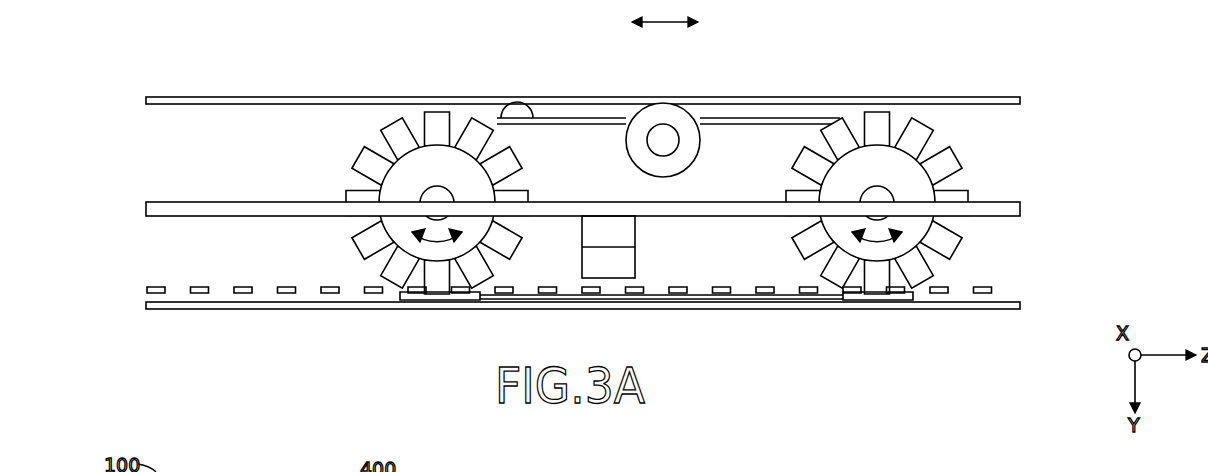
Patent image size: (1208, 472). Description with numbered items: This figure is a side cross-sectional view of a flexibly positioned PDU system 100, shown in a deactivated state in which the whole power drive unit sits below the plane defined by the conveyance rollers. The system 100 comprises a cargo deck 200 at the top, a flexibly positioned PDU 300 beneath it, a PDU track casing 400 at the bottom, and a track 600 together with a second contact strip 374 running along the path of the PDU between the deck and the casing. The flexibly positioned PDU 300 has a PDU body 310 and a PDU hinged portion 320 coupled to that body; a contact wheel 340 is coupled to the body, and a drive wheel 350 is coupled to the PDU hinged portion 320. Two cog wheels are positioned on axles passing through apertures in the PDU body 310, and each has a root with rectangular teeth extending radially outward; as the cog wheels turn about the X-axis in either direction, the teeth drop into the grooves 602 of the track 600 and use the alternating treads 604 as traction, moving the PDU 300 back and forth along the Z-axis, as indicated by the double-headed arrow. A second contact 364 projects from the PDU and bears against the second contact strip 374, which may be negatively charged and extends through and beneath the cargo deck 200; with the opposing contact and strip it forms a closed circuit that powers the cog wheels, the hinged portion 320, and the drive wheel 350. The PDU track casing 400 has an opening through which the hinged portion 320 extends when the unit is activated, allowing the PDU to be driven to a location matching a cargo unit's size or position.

The flexibly positioned PDU system 100 is at (166, 63).
The cargo deck 200 is at (1018, 98).
The flexibly positioned PDU 300 is at (728, 118).
The PDU body 310 is at (538, 270).
The PDU hinged portion 320 is at (587, 122).
The contact wheel 340 is at (677, 120).
The drive wheel 350 is at (513, 112).
The second contact 364 is at (630, 258).
The second contact strip 374 is at (1019, 204).
The PDU track casing 400 is at (1017, 309).
The track 600 is at (592, 291).
The grooves 602 is at (964, 288).
The treads 604 is at (943, 294).